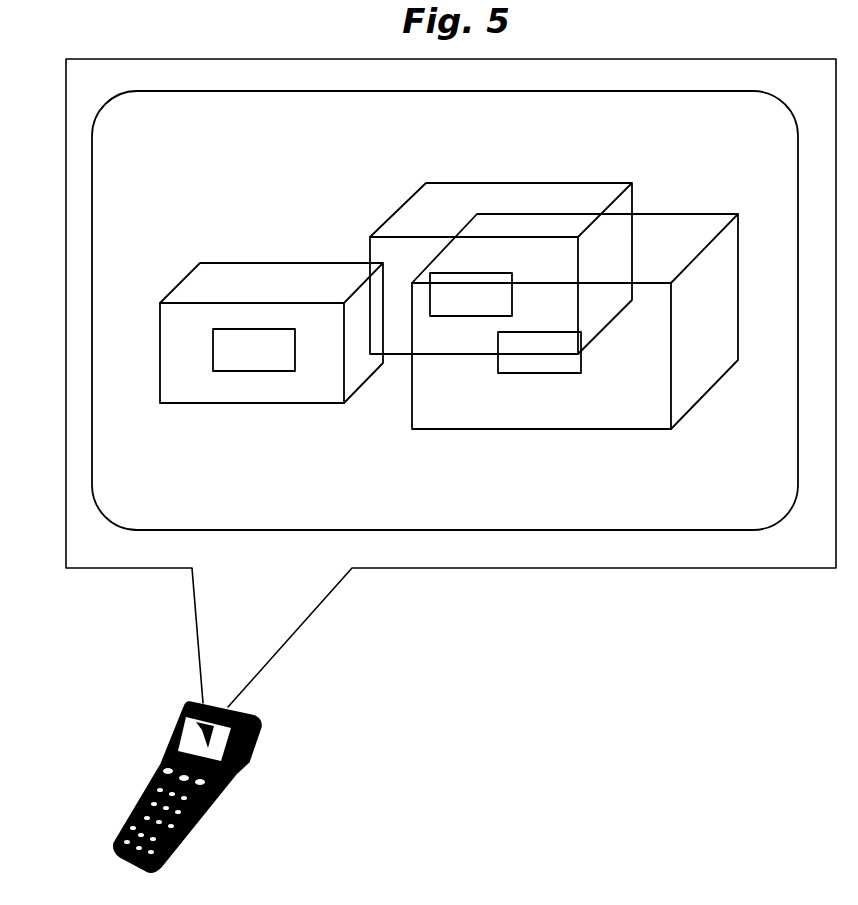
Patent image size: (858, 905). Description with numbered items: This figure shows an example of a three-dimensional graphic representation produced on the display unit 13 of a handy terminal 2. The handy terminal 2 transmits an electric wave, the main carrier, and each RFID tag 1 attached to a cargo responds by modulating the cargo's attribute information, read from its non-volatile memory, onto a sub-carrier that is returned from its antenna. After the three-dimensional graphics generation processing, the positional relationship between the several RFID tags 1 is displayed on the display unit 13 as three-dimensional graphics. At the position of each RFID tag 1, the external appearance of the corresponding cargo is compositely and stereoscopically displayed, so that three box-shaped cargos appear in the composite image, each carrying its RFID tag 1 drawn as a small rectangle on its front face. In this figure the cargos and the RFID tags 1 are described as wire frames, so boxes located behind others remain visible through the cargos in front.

The display unit 13 is at (70, 297).
The RFID tag 1 is at (215, 363).
The handy terminal 2 is at (96, 853).